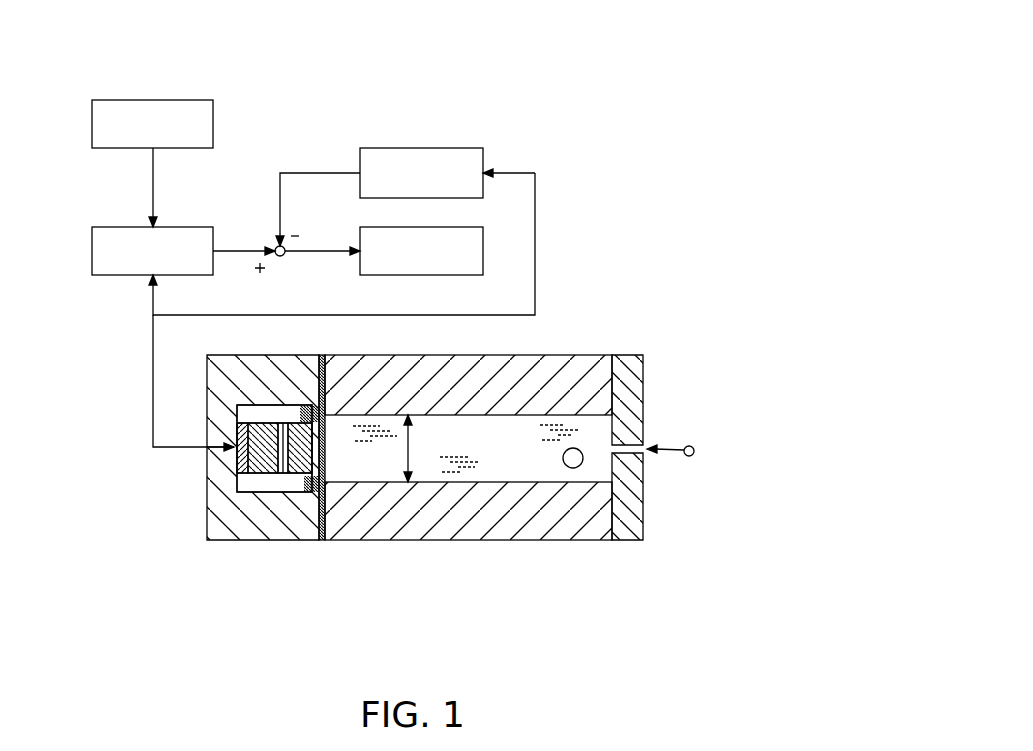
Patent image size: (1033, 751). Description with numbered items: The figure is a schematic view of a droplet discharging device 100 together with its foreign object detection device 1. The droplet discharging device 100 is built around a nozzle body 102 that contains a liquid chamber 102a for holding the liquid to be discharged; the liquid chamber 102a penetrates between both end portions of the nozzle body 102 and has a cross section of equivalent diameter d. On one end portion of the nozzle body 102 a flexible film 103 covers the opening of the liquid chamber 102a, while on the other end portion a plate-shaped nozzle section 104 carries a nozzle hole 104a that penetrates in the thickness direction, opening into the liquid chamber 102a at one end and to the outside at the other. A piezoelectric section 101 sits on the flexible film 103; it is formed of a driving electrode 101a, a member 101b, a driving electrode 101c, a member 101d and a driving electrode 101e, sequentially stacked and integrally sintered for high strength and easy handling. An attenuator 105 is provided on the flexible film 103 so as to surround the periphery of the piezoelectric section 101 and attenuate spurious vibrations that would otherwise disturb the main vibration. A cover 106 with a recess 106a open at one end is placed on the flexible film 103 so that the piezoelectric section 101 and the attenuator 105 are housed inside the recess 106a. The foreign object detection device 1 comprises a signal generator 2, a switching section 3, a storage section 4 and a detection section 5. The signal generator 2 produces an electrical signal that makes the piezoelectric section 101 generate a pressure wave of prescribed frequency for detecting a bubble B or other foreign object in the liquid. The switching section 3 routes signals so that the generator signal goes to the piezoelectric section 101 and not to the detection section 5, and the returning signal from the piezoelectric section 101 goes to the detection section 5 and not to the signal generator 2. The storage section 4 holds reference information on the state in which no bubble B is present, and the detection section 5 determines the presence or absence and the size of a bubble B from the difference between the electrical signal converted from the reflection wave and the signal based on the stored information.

The droplet discharging device 100 is at (712, 85).
The foreign object detection device 1 is at (550, 138).
The signal generator 2 is at (216, 130).
The switching section 3 is at (92, 243).
The storage section 4 is at (445, 148).
The detection section 5 is at (483, 249).
The piezoelectric section 101 is at (330, 633).
The driving electrode 101a is at (297, 474).
The member 101b is at (285, 474).
The driving electrode 101c is at (268, 474).
The member 101d is at (258, 476).
The driving electrode 101e is at (245, 474).
The nozzle body 102 is at (546, 540).
The liquid chamber 102a is at (520, 457).
The flexible film 103 is at (324, 515).
The nozzle section 104 is at (627, 540).
The nozzle hole 104a is at (668, 446).
The attenuator 105 is at (309, 492).
The cover 106 is at (207, 487).
The recess 106a is at (238, 422).
The bubble B is at (583, 447).